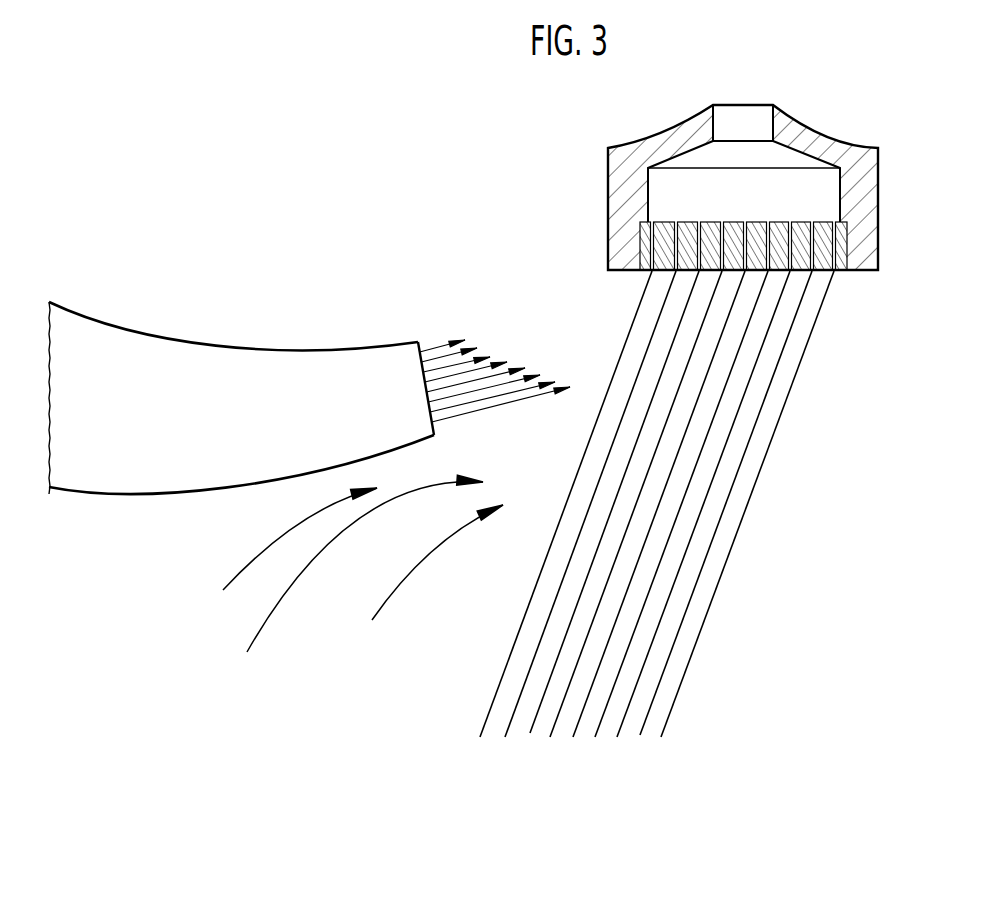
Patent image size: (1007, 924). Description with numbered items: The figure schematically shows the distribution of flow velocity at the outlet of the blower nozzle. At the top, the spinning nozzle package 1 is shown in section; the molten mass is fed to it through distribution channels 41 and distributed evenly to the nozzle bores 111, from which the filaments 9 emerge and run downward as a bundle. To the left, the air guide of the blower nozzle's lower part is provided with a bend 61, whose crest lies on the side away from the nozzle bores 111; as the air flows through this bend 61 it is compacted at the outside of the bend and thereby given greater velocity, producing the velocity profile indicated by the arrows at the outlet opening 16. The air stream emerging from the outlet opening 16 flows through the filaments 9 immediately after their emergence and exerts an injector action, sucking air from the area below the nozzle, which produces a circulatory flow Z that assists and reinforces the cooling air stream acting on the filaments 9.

The spinning nozzle package 1 is at (620, 192).
The distribution channels 41 is at (742, 126).
The nozzle bores 111 is at (794, 242).
The filaments 9 is at (743, 429).
The outlet opening 16 is at (417, 382).
The bend 61 is at (130, 478).
The circulatory flow Z is at (293, 595).